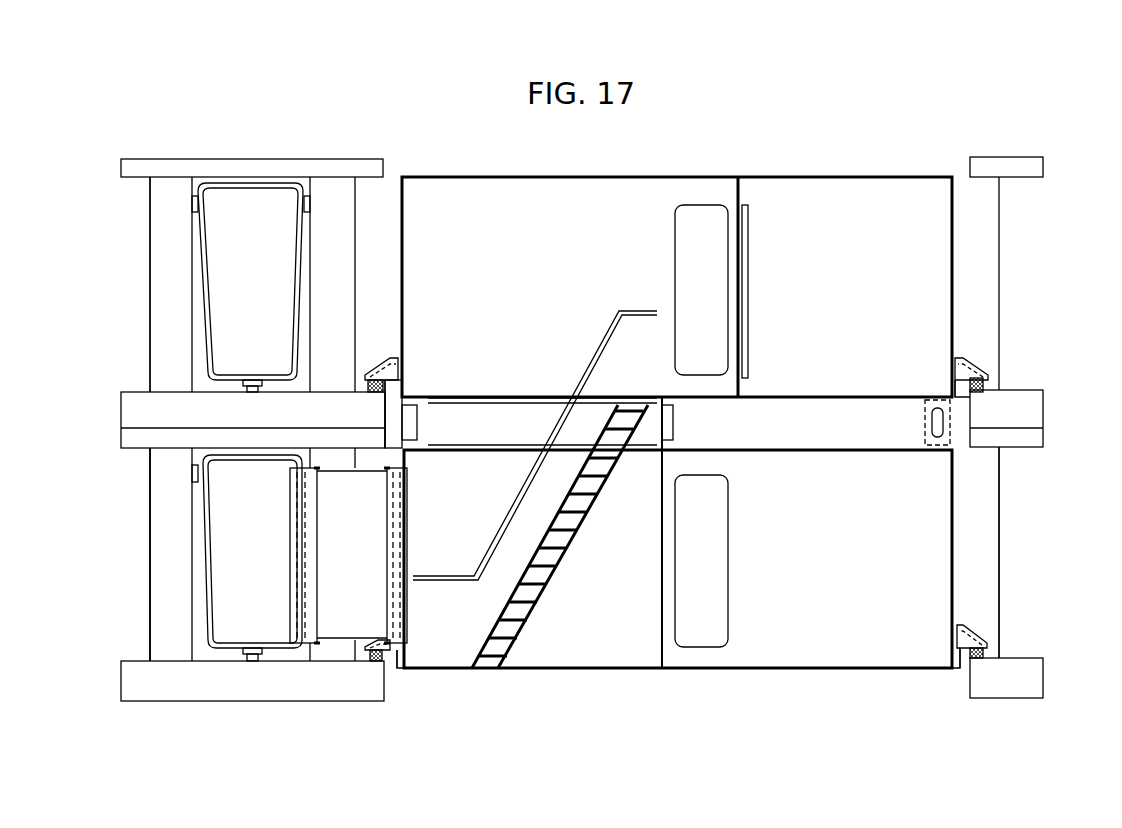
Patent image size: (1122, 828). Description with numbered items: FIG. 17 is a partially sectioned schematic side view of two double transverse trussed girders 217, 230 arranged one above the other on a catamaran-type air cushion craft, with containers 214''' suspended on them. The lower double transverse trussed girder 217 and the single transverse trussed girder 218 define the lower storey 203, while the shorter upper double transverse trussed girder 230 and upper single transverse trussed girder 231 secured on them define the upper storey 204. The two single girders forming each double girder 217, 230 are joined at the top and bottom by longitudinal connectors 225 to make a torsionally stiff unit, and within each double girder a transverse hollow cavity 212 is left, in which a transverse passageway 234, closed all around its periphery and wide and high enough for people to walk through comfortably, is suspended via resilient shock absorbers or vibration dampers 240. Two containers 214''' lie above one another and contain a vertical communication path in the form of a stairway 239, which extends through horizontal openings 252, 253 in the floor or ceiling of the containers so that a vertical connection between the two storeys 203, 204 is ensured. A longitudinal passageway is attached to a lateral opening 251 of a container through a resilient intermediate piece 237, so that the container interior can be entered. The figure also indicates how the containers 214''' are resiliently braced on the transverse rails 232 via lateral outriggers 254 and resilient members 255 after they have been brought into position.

The lower storey 203 is at (133, 513).
The upper storey 204 is at (140, 238).
The transverse hollow cavity 212 is at (195, 350).
The container 214''' is at (677, 425).
The double transverse trussed girder 217 is at (148, 548).
The single transverse trussed girder 218 is at (1015, 562).
The longitudinal connector 225 is at (262, 172).
The upper double transverse trussed girder 230 is at (146, 268).
The upper single transverse trussed girder 231 is at (1008, 318).
The transverse rail 232 is at (377, 390).
The transverse passageway 234 is at (205, 313).
The resilient intermediate piece 237 is at (340, 632).
The stairway 239 is at (573, 540).
The resilient shock absorber or vibration damper 240 is at (311, 200).
The lateral opening 251 is at (680, 254).
The horizontal opening 252 is at (504, 397).
The horizontal opening 253 is at (500, 453).
The lateral outrigger 254 is at (393, 368).
The resilient member 255 is at (392, 386).